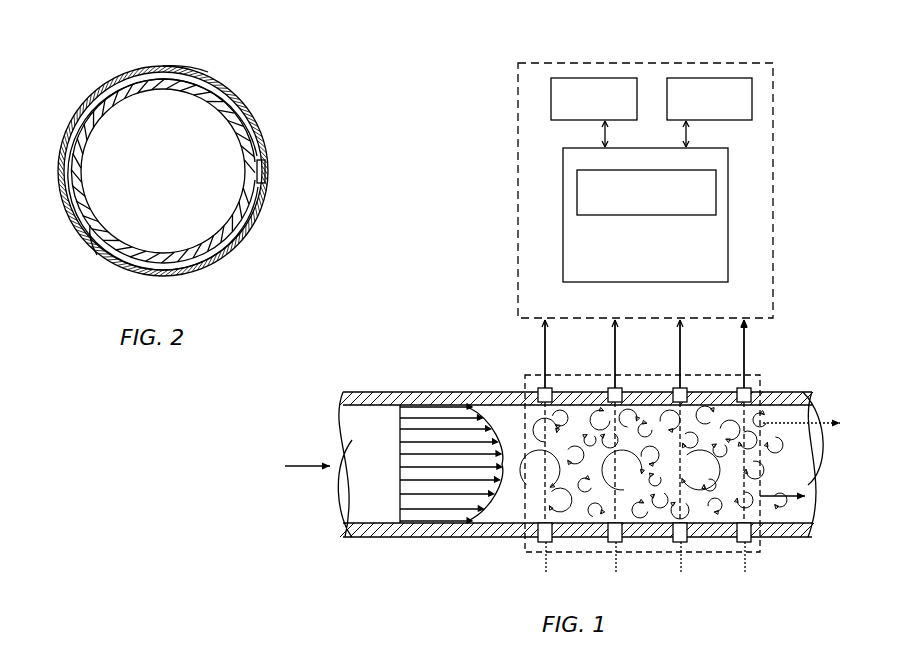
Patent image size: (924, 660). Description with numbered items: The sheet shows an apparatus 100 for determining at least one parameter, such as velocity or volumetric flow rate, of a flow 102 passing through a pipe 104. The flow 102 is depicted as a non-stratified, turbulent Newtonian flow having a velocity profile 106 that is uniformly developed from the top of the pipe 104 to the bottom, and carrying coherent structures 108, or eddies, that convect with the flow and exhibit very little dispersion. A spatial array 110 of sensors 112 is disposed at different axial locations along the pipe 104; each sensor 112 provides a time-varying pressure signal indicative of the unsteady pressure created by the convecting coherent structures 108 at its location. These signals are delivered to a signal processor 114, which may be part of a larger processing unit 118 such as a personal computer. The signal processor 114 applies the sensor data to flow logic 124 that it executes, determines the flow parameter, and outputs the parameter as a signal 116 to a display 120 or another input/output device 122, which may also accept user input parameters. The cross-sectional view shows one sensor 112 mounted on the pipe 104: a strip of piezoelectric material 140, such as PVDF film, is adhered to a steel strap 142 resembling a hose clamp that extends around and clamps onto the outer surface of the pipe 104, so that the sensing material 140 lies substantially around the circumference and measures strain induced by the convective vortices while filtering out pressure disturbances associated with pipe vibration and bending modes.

In FIG. 2, the apparatus 100 is at (62, 96).
In FIG. 1, the apparatus 100 is at (812, 70).
In FIG. 1, the flow 102 is at (312, 466).
In FIG. 2, the pipe 104 is at (265, 149).
In FIG. 1, the pipe 104 is at (442, 392).
In FIG. 1, the velocity profile 106 is at (418, 467).
In FIG. 1, the coherent structures 108 is at (785, 405).
In FIG. 2, the spatial array 110 is at (209, 72).
In FIG. 1, the spatial array 110 is at (522, 546).
In FIG. 2, the sensors 112 is at (224, 266).
In FIG. 1, the sensors 112 is at (545, 543).
In FIG. 1, the signal processor 114 is at (728, 198).
In FIG. 1, the signal 116 is at (603, 134).
In FIG. 1, the processing unit 118 is at (773, 157).
In FIG. 1, the display 120 is at (700, 78).
In FIG. 1, the input/output device 122 is at (594, 78).
In FIG. 1, the flow logic 124 is at (700, 170).
In FIG. 2, the piezoelectric material 140 is at (97, 255).
In FIG. 2, the steel strap 142 is at (247, 118).